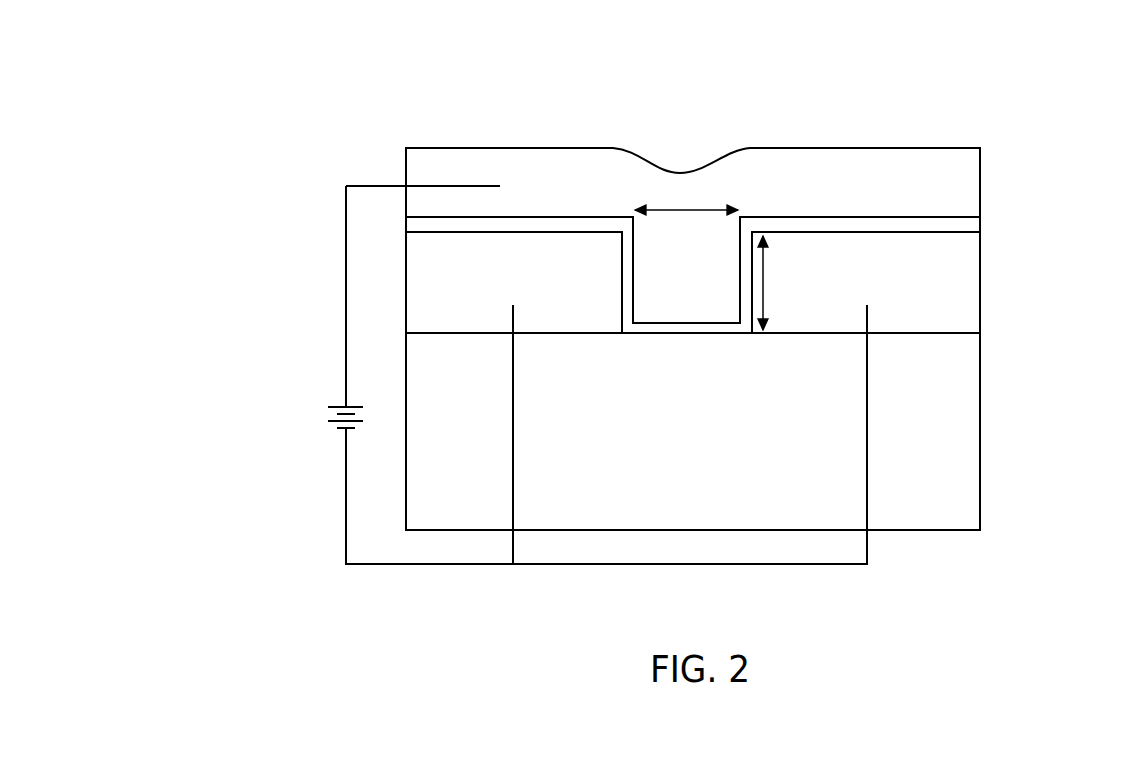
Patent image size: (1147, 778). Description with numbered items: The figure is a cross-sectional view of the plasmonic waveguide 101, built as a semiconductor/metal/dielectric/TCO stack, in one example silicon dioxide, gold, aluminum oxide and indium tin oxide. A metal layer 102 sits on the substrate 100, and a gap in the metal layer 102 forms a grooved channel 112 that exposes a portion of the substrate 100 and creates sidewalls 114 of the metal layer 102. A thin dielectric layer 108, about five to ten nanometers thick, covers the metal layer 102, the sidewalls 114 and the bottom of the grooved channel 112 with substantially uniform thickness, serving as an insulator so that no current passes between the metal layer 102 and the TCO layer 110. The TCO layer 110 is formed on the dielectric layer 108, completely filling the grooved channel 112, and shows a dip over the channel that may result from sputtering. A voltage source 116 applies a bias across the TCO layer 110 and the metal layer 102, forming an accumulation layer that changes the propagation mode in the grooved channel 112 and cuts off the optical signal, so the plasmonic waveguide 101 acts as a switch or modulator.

The plasmonic waveguide 101 is at (905, 63).
The TCO layer 110 is at (437, 165).
The dielectric layer 108 is at (410, 227).
The grooved channel 112 is at (686, 228).
The sidewalls 114 is at (631, 251).
The metal layer 102 is at (410, 304).
The substrate 100 is at (960, 443).
The voltage source 116 is at (292, 418).